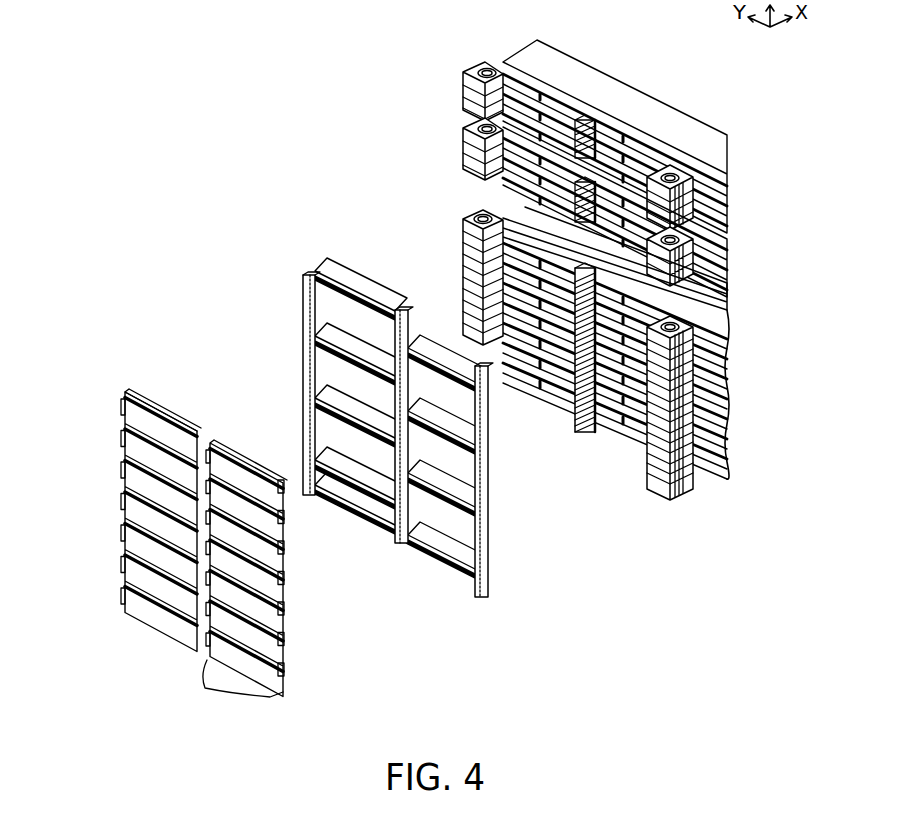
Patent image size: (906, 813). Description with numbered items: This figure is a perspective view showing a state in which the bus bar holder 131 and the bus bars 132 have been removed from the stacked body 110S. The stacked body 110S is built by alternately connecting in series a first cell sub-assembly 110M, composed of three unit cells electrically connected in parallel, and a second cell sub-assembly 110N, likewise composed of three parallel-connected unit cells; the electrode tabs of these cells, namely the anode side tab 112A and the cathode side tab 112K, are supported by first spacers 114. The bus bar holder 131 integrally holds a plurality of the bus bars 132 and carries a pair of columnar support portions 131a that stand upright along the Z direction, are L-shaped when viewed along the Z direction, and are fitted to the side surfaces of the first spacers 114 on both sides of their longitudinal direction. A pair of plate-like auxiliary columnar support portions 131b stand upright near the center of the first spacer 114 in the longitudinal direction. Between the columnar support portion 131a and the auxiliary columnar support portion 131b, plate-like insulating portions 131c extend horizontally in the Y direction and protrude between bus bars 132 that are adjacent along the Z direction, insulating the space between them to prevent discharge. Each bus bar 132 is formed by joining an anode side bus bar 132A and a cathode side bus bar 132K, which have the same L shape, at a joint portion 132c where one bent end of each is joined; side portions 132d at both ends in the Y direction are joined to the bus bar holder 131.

The stacked body 110S is at (634, 271).
The first cell sub-assembly 110M is at (628, 241).
The second cell sub-assembly 110N is at (739, 213).
The anode side electrode tab 112A is at (527, 132).
The cathode side electrode tab 112K is at (525, 113).
The first spacer 114 is at (697, 486).
The bus bar holder 131 is at (360, 414).
The columnar support portion 131a is at (407, 470).
The auxiliary columnar support portion 131b is at (472, 472).
The insulating portion 131c is at (433, 422).
The bus bar 132 is at (203, 545).
The anode side bus bar 132A is at (135, 452).
The cathode side bus bar 132K is at (135, 420).
The joint portion 132c is at (153, 437).
The side portion 132d is at (223, 691).